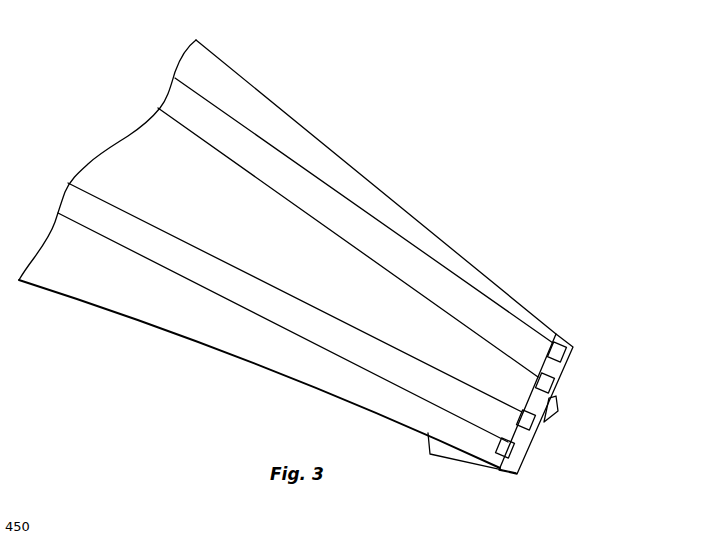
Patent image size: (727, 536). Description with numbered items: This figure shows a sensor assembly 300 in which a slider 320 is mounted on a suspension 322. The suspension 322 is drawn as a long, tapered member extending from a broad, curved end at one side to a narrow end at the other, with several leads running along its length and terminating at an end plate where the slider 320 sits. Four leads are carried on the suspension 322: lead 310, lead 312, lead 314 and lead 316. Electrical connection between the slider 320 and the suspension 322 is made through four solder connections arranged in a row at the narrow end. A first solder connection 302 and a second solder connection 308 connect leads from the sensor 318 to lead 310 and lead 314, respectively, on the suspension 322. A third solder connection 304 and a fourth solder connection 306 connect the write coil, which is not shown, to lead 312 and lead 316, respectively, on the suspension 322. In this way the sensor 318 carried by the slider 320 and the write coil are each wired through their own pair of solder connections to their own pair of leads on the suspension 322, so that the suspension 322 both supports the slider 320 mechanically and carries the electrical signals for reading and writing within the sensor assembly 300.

The sensor assembly 300 is at (157, 397).
The first solder connection 302 is at (508, 452).
The third solder connection 304 is at (530, 432).
The fourth solder connection 306 is at (548, 383).
The second solder connection 308 is at (573, 348).
The lead 310 is at (253, 310).
The lead 312 is at (380, 338).
The lead 314 is at (428, 262).
The lead 316 is at (478, 328).
The sensor 318 is at (553, 410).
The slider 320 is at (456, 453).
The suspension 322 is at (370, 407).